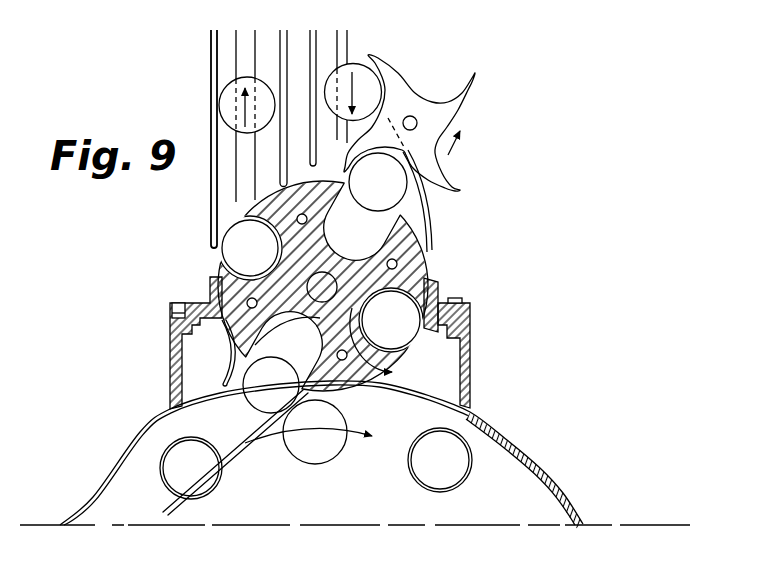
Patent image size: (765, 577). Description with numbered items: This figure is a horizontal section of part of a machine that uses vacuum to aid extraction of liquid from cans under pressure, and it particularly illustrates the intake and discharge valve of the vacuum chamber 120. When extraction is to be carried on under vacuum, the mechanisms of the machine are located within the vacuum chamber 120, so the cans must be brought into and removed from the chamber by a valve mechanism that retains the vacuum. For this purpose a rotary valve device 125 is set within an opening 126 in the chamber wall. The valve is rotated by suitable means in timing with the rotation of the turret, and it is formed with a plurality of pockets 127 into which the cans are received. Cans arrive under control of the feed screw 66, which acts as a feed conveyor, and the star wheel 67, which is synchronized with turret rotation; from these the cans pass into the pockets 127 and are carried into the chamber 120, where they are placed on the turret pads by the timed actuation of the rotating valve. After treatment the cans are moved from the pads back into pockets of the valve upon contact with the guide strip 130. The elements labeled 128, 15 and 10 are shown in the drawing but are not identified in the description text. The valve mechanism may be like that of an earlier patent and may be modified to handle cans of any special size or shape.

The feed screw 66 is at (340, 52).
The star wheel 67 is at (448, 110).
The rotary valve device 125 is at (430, 257).
The opening 126 is at (440, 383).
The pockets 127 is at (432, 280).
The rollers 128 is at (338, 247).
The vacuum chamber 120 is at (527, 448).
The ball 15 is at (446, 443).
The guide strip 130 is at (247, 473).
The base 10 is at (520, 500).